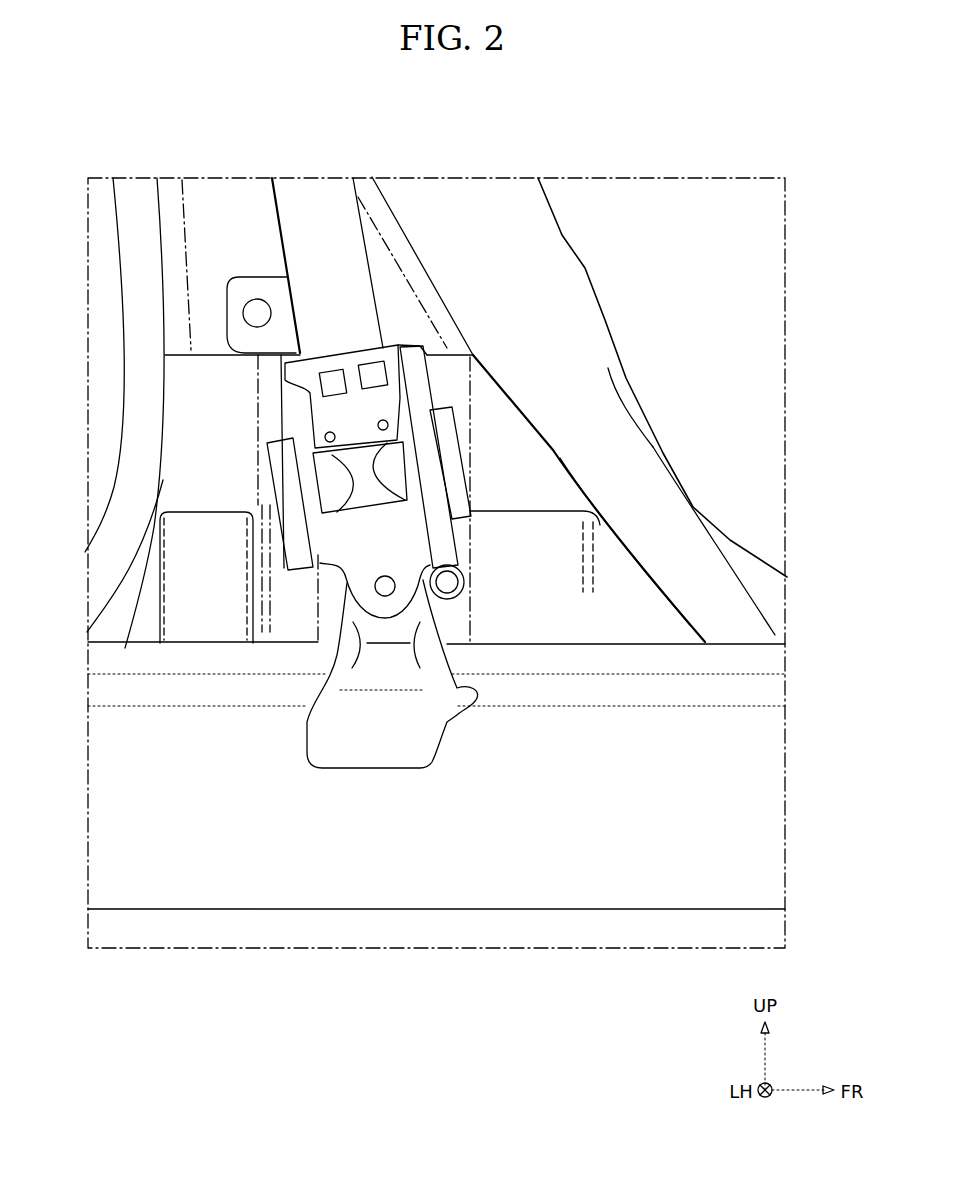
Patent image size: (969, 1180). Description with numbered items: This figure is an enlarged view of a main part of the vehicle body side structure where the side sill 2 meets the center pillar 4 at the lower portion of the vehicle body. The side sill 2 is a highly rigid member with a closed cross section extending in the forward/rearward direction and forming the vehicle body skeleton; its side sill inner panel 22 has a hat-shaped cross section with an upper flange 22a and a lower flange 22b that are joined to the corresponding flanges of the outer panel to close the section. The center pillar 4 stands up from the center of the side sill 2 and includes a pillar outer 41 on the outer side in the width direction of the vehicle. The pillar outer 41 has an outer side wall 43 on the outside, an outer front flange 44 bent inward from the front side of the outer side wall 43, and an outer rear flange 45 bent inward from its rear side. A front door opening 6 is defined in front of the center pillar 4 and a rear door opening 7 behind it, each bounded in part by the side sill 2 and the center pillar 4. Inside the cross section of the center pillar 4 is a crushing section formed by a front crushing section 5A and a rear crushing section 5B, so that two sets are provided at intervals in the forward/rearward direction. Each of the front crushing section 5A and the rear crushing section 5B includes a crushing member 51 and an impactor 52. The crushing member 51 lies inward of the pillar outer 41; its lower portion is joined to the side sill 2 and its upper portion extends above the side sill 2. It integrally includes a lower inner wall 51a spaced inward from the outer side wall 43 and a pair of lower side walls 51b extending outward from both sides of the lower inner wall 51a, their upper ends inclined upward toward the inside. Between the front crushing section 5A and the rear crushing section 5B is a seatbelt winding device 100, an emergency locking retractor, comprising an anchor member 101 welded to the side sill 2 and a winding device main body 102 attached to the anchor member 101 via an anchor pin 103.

The side sill 2 is at (764, 636).
The center pillar 4 is at (586, 260).
The pillar outer 41 is at (562, 240).
The outer side wall 43 is at (233, 198).
The outer front flange 44 is at (557, 446).
The outer rear flange 45 is at (132, 275).
The front crushing section 5A is at (623, 385).
The rear crushing section 5B is at (172, 384).
The front door opening 6 is at (727, 540).
The rear door opening 7 is at (113, 218).
The side sill inner panel 22 is at (760, 775).
The upper flange 22a is at (760, 667).
The lower flange 22b is at (760, 918).
The crushing member 51 is at (184, 575).
The lower inner wall 51a is at (207, 615).
The lower side walls 51b is at (155, 633).
The impactor 52 is at (184, 460).
The seatbelt winding device 100 is at (470, 418).
The anchor member 101 is at (378, 740).
The winding device main body 102 is at (453, 467).
The anchor pin 103 is at (395, 587).